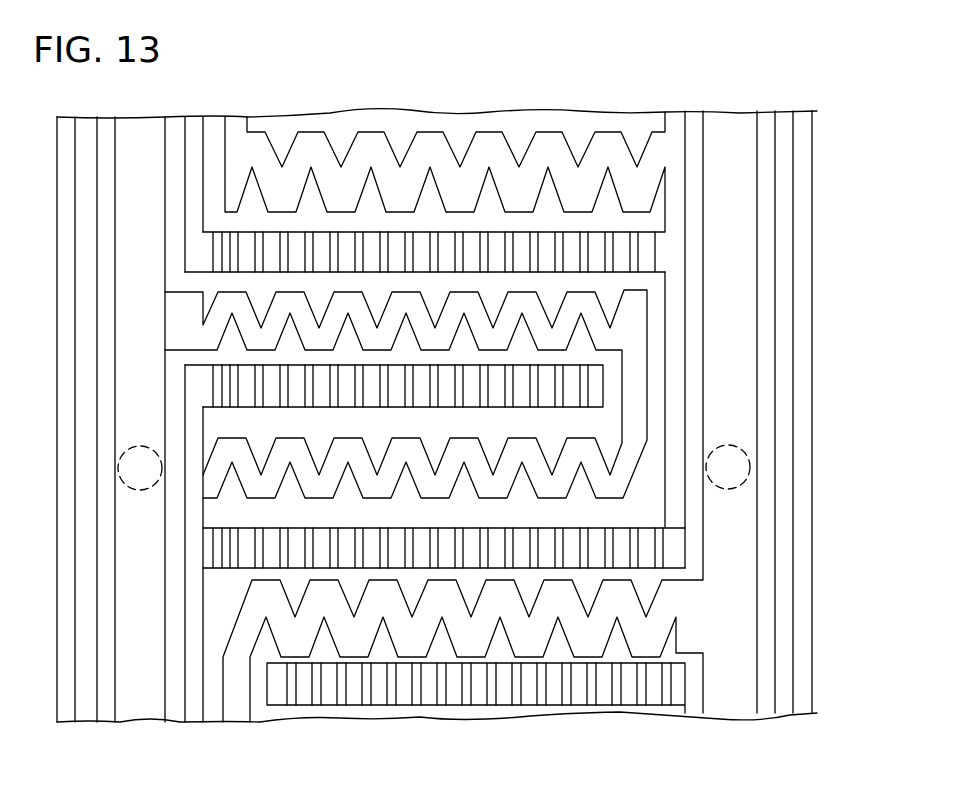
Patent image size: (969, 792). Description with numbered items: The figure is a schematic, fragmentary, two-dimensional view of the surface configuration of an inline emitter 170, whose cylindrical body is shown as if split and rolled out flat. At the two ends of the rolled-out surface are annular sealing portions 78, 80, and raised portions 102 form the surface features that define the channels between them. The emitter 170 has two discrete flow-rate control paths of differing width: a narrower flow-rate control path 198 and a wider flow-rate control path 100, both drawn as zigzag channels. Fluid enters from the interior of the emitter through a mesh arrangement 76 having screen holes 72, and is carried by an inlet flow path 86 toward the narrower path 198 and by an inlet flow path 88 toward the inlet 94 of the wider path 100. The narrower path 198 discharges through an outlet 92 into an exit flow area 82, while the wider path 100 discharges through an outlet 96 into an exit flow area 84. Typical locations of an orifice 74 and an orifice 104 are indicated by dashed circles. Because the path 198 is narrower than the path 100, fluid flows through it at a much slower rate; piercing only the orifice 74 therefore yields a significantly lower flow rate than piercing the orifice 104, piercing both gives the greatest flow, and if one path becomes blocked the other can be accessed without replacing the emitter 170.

The screen holes 72 is at (583, 232).
The orifice 74 is at (128, 446).
The mesh arrangement 76 is at (568, 358).
The annular sealing portion 78 is at (115, 108).
The annular sealing portion 80 is at (812, 106).
The exit flow area 82 is at (158, 601).
The exit flow area 84 is at (743, 546).
The inlet flow path 86 is at (193, 683).
The inlet flow path 88 is at (672, 368).
The outlet 92 is at (178, 329).
The inlet 94 is at (682, 159).
The outlet 96 is at (725, 633).
The flow-rate control path 100 is at (422, 191).
The raised portions 102 is at (260, 117).
The orifice 104 is at (743, 444).
The inline emitter 170 is at (809, 313).
The flow-rate control path 198 is at (407, 450).